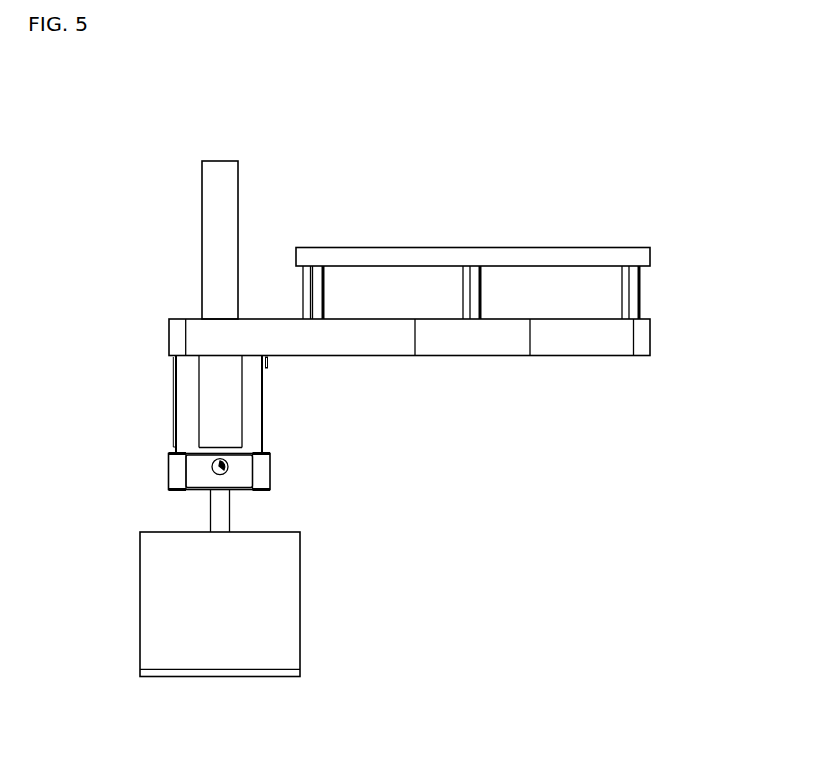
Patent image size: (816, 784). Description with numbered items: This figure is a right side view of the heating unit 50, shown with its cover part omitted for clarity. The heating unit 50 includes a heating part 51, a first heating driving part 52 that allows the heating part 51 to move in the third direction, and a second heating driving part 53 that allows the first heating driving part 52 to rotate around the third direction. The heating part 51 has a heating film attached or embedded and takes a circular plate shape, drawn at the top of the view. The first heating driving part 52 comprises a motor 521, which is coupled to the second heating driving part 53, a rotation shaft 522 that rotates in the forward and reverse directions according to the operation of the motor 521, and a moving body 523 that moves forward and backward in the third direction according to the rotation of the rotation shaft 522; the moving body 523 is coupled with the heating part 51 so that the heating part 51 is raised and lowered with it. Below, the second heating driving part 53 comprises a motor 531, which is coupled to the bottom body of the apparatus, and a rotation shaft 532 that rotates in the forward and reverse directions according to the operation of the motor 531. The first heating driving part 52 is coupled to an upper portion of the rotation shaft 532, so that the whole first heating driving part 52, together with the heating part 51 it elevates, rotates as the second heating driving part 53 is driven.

The heating unit 50 is at (662, 148).
The heating part 51 is at (643, 255).
The first heating driving part 52 is at (133, 271).
The motor 521 is at (233, 408).
The rotation shaft 522 is at (223, 193).
The moving body 523 is at (484, 340).
The second heating driving part 53 is at (318, 589).
The motor 531 is at (145, 603).
The rotation shaft 532 is at (218, 513).